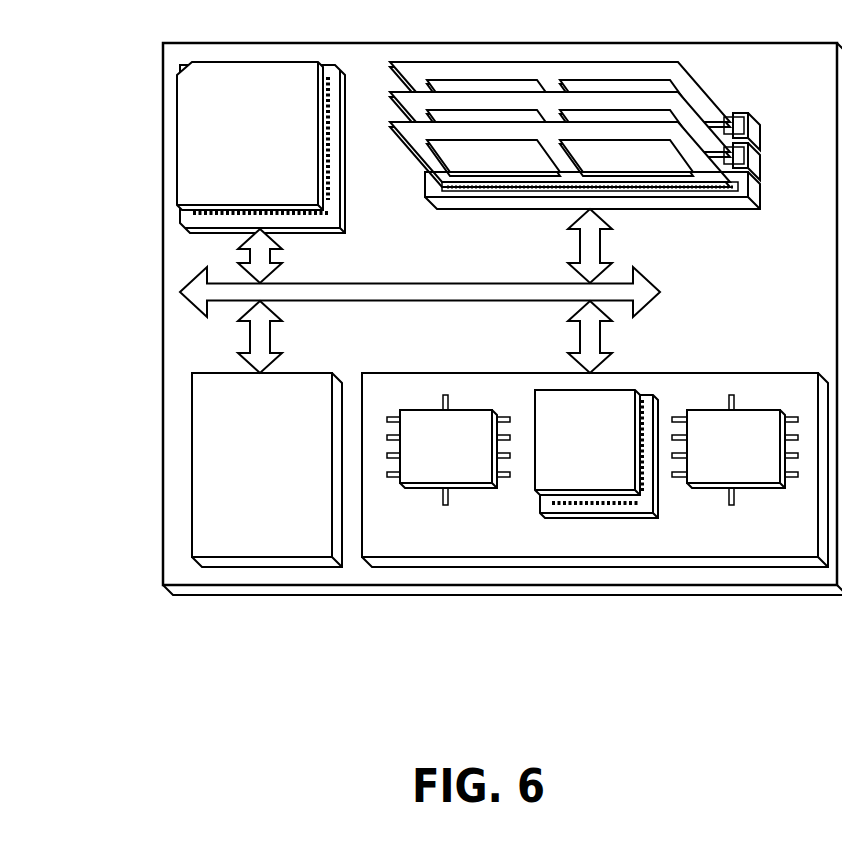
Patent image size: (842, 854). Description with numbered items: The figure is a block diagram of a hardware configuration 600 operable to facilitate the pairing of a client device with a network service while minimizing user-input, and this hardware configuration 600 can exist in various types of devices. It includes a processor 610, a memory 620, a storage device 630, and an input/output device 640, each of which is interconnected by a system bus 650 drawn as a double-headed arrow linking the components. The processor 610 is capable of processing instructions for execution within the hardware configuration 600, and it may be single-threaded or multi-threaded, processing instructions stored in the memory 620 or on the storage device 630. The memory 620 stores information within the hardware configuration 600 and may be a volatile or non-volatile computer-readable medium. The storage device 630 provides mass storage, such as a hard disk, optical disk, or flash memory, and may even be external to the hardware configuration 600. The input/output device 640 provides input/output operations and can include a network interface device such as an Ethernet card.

The hardware configuration 600 is at (124, 623).
The processor 610 is at (307, 196).
The memory 620 is at (713, 101).
The storage device 630 is at (318, 552).
The input/output device 640 is at (782, 373).
The system bus 650 is at (417, 302).